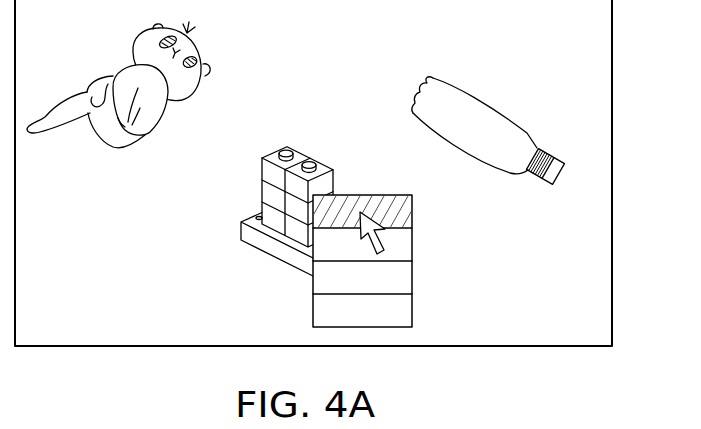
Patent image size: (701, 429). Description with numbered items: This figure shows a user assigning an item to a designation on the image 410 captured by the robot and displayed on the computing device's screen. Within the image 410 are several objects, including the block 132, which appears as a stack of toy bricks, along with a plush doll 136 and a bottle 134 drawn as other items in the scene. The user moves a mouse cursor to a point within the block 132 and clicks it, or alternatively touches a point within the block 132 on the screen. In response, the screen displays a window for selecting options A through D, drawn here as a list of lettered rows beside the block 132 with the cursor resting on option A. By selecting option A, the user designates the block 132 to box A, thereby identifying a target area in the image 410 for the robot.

The image 410 is at (612, 80).
The toy doll object 136 is at (113, 78).
The bottle object 134 is at (547, 148).
The block 132 is at (313, 152).